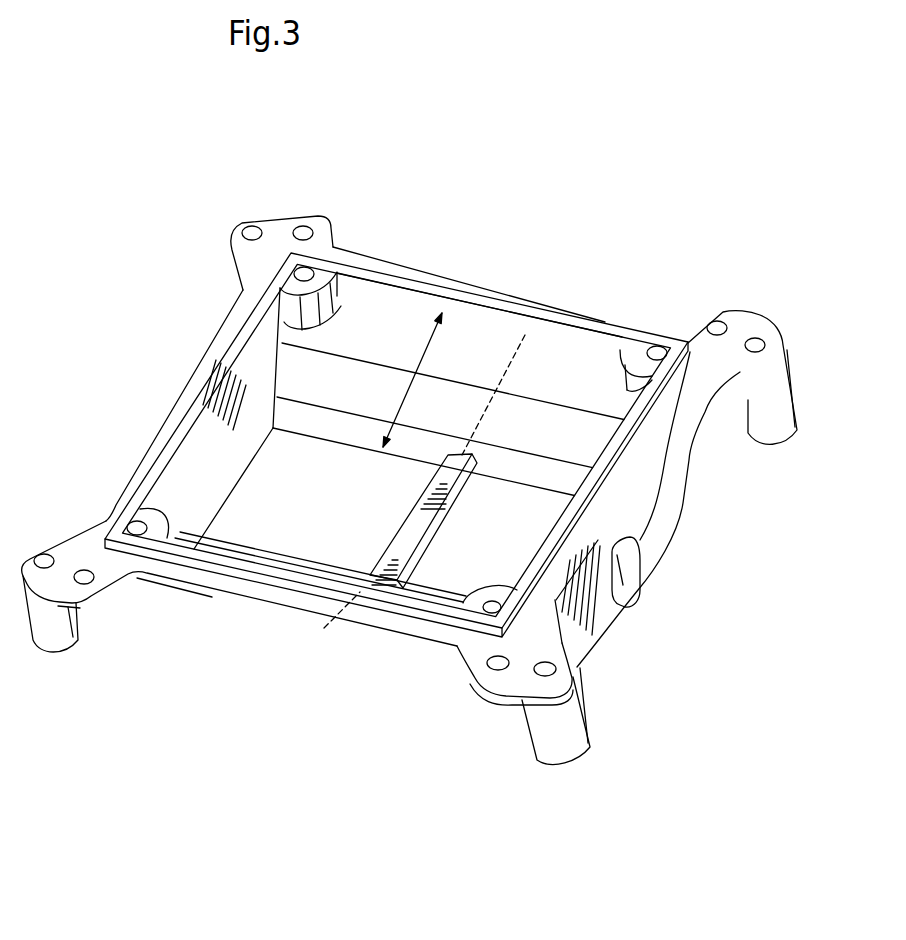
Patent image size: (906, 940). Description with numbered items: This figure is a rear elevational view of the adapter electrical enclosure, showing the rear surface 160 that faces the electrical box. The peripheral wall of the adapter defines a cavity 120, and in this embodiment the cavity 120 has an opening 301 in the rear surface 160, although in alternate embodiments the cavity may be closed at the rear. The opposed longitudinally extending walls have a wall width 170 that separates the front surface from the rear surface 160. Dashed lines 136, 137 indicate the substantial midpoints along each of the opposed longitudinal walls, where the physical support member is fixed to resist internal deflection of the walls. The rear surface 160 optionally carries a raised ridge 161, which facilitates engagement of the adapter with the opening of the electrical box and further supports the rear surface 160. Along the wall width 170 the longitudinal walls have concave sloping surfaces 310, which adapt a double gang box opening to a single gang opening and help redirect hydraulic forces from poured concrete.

The cavity 120 is at (424, 405).
The dashed line (midpoint) 136 is at (522, 352).
The dashed line (midpoint) 137 is at (341, 625).
The rear surface 160 is at (409, 490).
The raised ridge 161 is at (657, 317).
The wall width 170 is at (440, 341).
The opening in the rear surface 301 is at (560, 482).
The concave sloping surface 310 is at (378, 315).